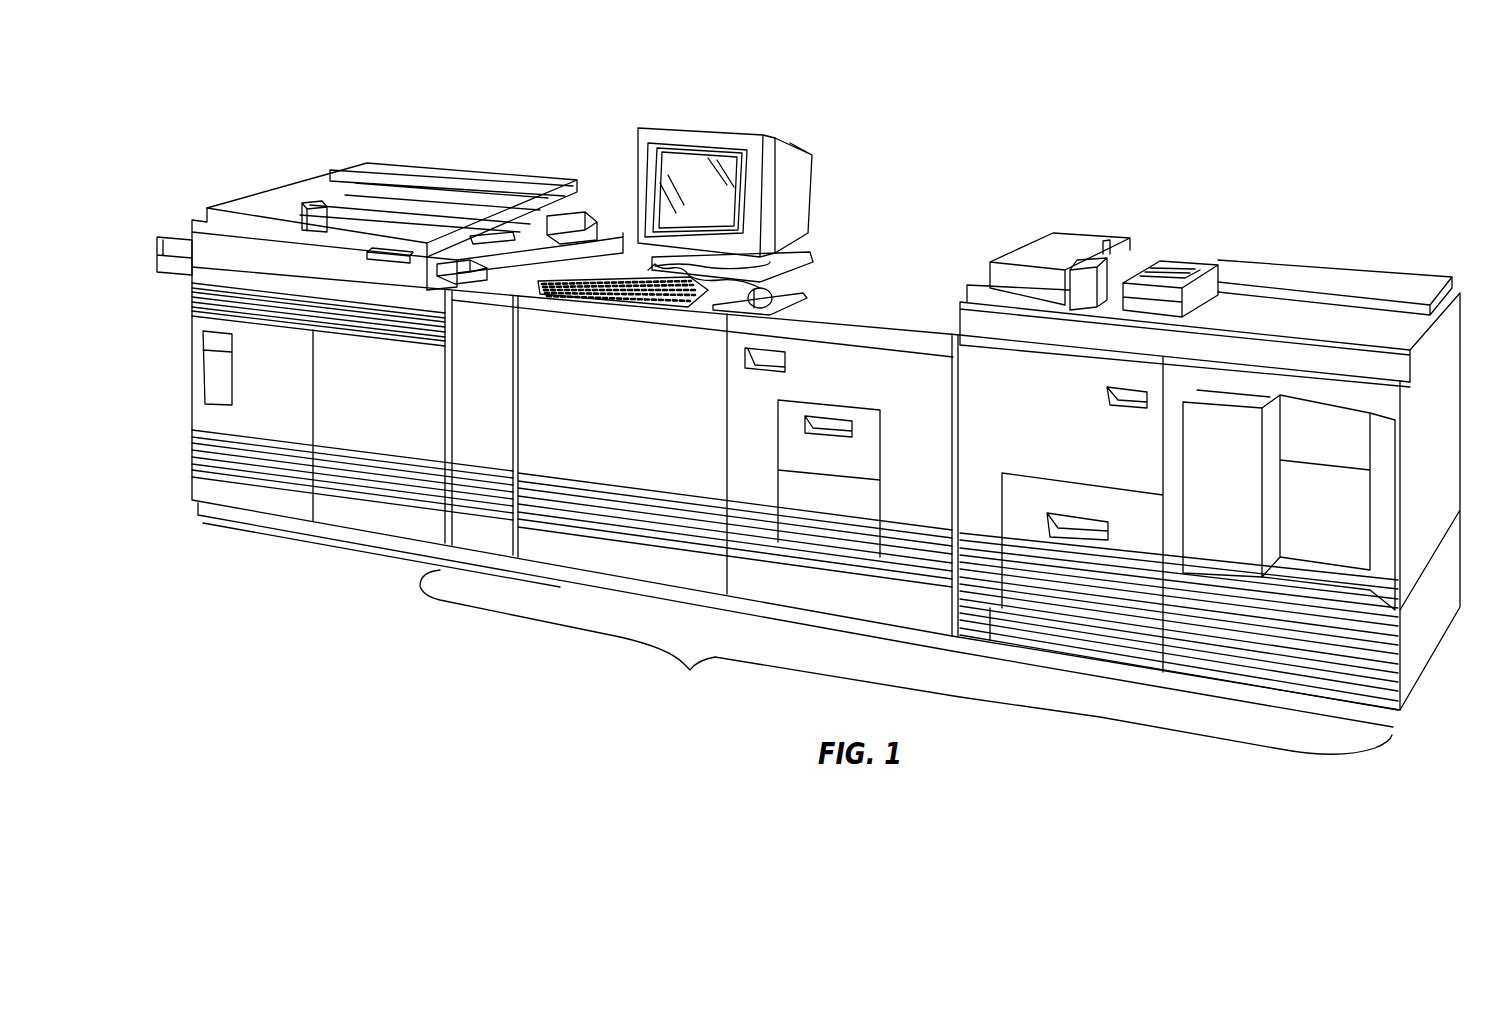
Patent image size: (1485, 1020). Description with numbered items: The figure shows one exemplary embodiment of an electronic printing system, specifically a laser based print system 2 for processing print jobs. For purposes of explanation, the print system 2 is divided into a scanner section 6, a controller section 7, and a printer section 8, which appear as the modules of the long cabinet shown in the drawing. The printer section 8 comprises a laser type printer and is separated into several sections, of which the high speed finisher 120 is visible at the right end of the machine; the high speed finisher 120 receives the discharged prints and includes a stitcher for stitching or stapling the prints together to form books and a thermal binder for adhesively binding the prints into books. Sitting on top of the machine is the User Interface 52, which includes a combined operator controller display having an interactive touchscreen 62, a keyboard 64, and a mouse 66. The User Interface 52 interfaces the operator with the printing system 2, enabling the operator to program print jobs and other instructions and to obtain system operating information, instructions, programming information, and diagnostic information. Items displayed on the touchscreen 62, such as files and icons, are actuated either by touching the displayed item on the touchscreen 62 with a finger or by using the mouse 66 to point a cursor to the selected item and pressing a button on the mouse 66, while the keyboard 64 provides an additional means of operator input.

The print system 2 is at (996, 112).
The scanner section 6 is at (434, 130).
The controller section 7 is at (186, 413).
The printer section 8 is at (689, 700).
The User Interface 52 is at (718, 124).
The interactive touchscreen 62 is at (676, 170).
The keyboard 64 is at (610, 282).
The mouse 66 is at (795, 292).
The high speed finisher 120 is at (1277, 238).